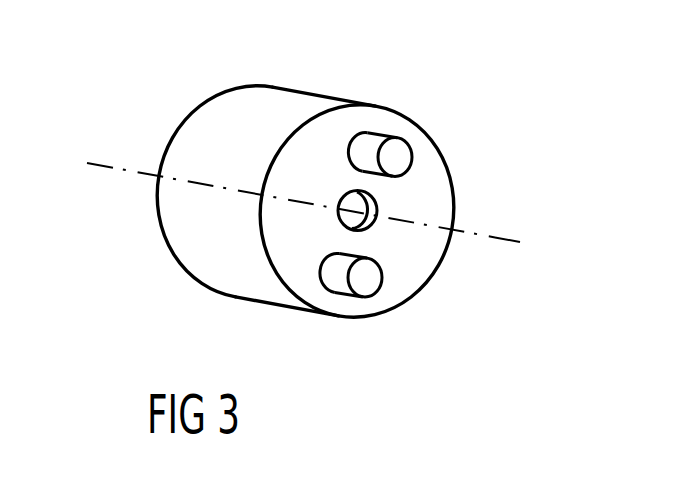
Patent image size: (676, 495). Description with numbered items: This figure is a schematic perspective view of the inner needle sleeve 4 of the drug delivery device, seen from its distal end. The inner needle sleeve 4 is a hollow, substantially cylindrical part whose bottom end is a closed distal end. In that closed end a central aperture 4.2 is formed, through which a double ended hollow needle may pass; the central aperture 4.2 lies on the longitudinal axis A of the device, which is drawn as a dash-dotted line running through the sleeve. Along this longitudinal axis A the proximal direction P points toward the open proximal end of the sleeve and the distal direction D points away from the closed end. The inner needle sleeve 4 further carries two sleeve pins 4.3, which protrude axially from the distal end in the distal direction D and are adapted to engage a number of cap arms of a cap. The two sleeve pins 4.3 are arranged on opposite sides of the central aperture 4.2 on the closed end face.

The inner needle sleeve 4 is at (169, 89).
The sleeve pins 4.3 is at (397, 152).
The central aperture 4.2 is at (376, 210).
The longitudinal axis A is at (112, 170).
The proximal direction P is at (85, 160).
The distal direction D is at (520, 245).